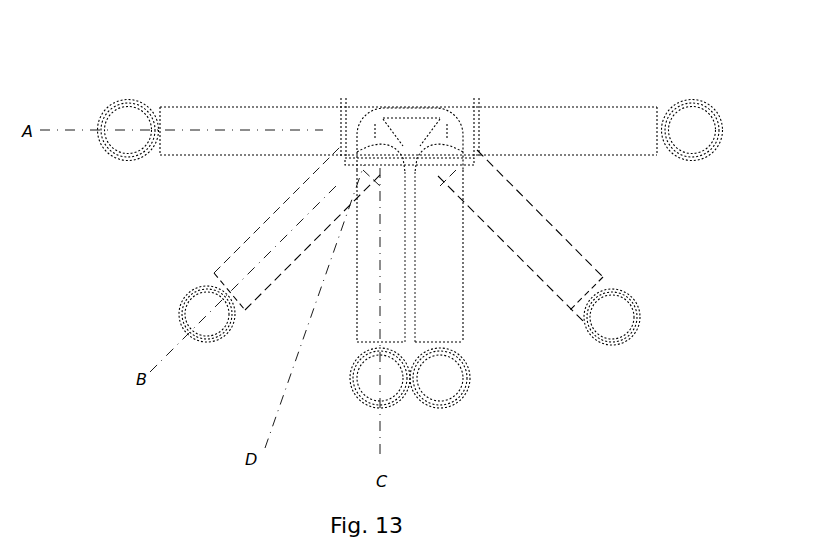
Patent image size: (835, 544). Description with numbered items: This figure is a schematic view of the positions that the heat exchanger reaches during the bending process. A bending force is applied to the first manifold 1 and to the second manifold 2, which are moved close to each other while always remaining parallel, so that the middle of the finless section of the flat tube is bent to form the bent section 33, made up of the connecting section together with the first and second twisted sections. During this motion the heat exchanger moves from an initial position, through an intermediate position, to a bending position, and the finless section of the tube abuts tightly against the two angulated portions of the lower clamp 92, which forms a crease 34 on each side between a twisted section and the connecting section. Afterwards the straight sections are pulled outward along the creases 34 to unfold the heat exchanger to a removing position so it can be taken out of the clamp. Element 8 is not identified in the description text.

The first manifold 1 is at (129, 129).
The second manifold 2 is at (693, 129).
The clamp ring 8 is at (344, 99).
The bent section 33 is at (411, 109).
The crease 34 is at (383, 117).
The lower clamp 92 is at (409, 129).